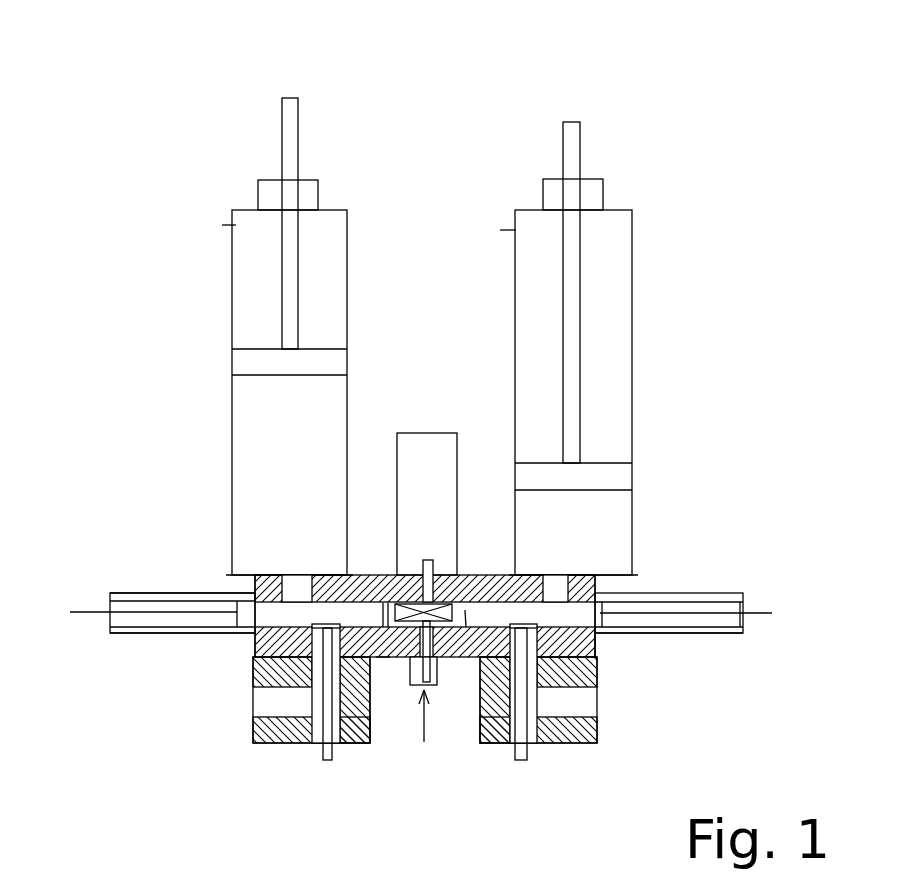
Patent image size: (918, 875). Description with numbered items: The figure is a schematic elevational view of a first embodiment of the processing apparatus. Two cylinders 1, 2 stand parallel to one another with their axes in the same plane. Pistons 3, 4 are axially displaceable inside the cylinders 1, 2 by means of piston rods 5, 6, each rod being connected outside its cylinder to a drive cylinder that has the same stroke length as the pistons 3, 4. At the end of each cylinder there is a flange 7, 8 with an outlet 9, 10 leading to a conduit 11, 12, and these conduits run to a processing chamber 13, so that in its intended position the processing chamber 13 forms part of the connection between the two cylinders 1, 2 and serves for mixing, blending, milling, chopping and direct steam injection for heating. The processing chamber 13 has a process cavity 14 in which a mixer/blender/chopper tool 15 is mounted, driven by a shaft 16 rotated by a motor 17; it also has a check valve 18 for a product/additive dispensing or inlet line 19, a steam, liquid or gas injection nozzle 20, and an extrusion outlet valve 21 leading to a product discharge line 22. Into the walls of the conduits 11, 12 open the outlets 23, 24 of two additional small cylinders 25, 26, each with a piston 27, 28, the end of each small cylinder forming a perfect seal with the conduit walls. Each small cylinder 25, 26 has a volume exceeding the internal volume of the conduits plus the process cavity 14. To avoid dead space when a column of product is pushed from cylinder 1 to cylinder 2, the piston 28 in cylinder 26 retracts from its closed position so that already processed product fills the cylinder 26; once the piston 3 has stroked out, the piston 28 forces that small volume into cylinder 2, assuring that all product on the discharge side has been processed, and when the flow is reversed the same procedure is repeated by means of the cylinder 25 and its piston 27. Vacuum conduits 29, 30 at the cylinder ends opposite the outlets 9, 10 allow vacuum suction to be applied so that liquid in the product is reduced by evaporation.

The cylinder 1 is at (347, 235).
The cylinder 2 is at (633, 232).
The piston 3 is at (253, 365).
The piston 4 is at (607, 478).
The piston rod 5 is at (290, 120).
The piston rod 6 is at (580, 128).
The flange 7 is at (245, 573).
The flange 8 is at (612, 573).
The outlet 9 is at (297, 573).
The outlet 10 is at (555, 578).
The conduit 11 is at (250, 638).
The conduit 12 is at (598, 663).
The processing chamber 13 is at (384, 605).
The process cavity 14 is at (466, 612).
The mixer/blender/chopper tool 15 is at (383, 658).
The shaft 16 is at (430, 562).
The motor 17 is at (420, 455).
The check valve 18 is at (328, 760).
The inlet line 19 is at (270, 748).
The injection nozzle 20 is at (437, 686).
The extrusion outlet valve 21 is at (525, 760).
The product discharge line 22 is at (597, 717).
The outlet 23 is at (253, 593).
The outlet 24 is at (600, 633).
The small cylinder 25 is at (122, 635).
The small cylinder 26 is at (732, 593).
The piston 27 is at (200, 633).
The piston 28 is at (600, 632).
The vacuum conduit 29 is at (230, 225).
The vacuum conduit 30 is at (512, 229).